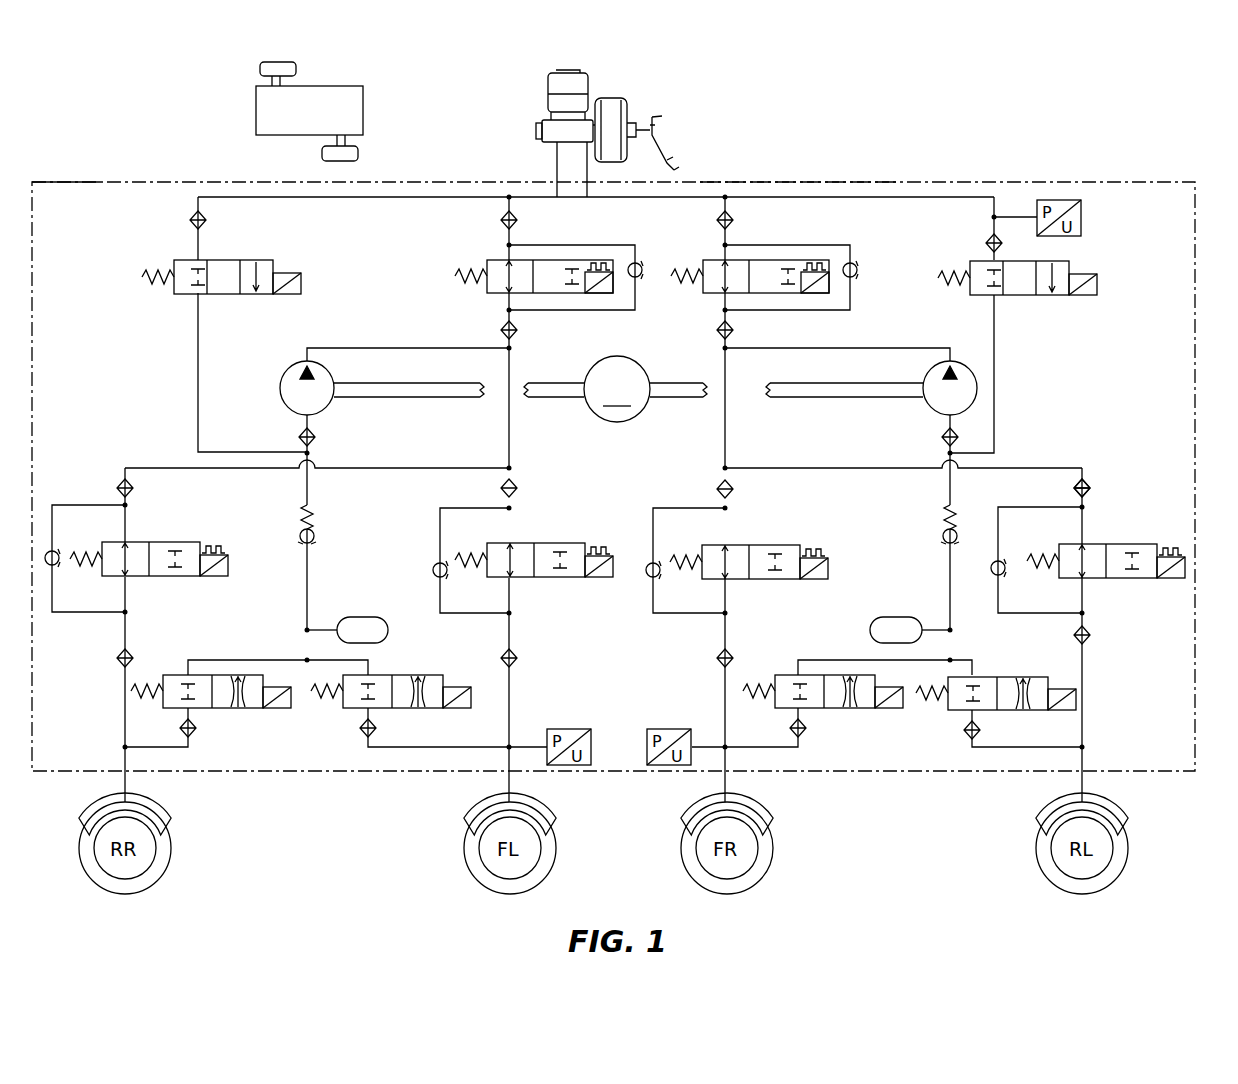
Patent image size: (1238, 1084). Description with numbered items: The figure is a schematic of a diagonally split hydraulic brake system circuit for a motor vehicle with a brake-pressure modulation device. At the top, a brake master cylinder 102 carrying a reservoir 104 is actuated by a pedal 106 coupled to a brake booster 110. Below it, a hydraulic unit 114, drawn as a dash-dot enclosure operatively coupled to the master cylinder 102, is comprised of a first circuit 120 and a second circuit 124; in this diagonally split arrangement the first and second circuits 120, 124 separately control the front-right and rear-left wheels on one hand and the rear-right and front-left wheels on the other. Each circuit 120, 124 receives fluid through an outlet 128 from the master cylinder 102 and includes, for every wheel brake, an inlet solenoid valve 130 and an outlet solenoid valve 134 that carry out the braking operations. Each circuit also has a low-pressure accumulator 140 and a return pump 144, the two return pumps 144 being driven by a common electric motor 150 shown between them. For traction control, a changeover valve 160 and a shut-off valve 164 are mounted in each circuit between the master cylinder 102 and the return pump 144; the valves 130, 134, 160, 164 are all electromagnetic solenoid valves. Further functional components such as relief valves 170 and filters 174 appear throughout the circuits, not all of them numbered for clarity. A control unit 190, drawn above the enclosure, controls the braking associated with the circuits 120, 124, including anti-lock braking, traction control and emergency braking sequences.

The brake master cylinder 102 is at (540, 130).
The reservoir 104 is at (557, 87).
The pedal 106 is at (665, 138).
The brake booster 110 is at (617, 97).
The hydraulic unit 114 is at (787, 181).
The first circuit 120 is at (1006, 173).
The second circuit 124 is at (192, 173).
The outlet 128 is at (368, 200).
The inlet solenoid valve 130 is at (140, 542).
The outlet solenoid valve 134 is at (172, 675).
The low-pressure accumulator 140 is at (364, 617).
The return pump 144 is at (287, 372).
The electric motor 150 is at (604, 358).
The changeover valve 160 is at (492, 296).
The shut-off valve 164 is at (182, 296).
The relief valve 170 is at (432, 565).
The filter 174 is at (518, 655).
The control unit 190 is at (363, 108).